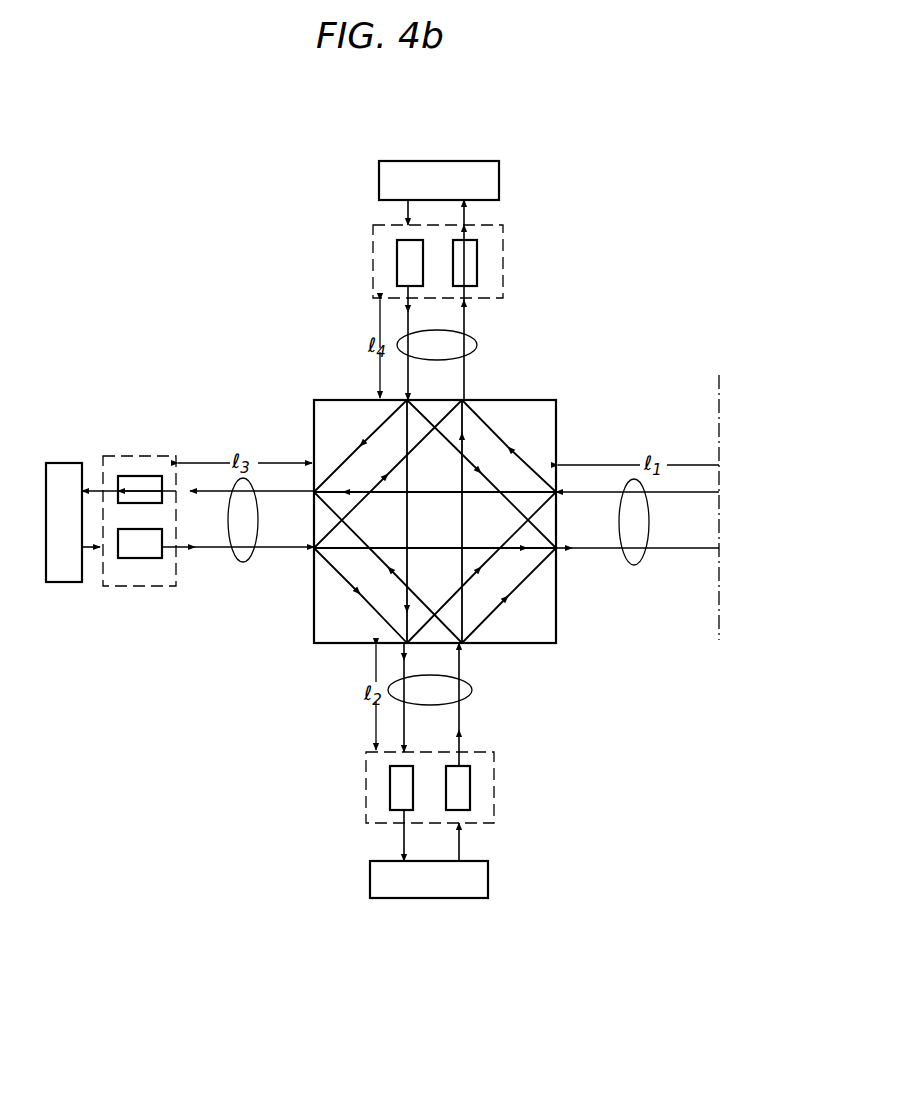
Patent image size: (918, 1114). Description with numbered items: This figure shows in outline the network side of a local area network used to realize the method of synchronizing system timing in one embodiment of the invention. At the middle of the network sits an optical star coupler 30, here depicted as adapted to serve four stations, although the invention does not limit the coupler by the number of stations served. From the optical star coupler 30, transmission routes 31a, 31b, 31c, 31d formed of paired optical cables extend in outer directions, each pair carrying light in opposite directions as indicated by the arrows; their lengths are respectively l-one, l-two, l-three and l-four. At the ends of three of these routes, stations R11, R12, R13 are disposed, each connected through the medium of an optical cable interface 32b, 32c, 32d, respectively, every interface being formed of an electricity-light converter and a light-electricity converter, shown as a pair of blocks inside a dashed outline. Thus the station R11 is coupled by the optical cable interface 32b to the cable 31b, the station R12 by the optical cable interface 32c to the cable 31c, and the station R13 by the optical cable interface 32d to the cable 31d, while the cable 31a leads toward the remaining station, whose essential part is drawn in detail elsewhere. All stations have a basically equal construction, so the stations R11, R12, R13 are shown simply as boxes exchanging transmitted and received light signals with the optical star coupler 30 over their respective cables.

The optical star coupler 30 is at (558, 622).
The transmission route 31a is at (633, 565).
The transmission route 31b is at (472, 693).
The transmission route 31c is at (248, 561).
The transmission route 31d is at (477, 348).
The optical cable interface 32b is at (494, 786).
The optical cable interface 32c is at (130, 455).
The optical cable interface 32d is at (503, 252).
The station R11 is at (390, 898).
The station R12 is at (66, 582).
The station R13 is at (400, 160).